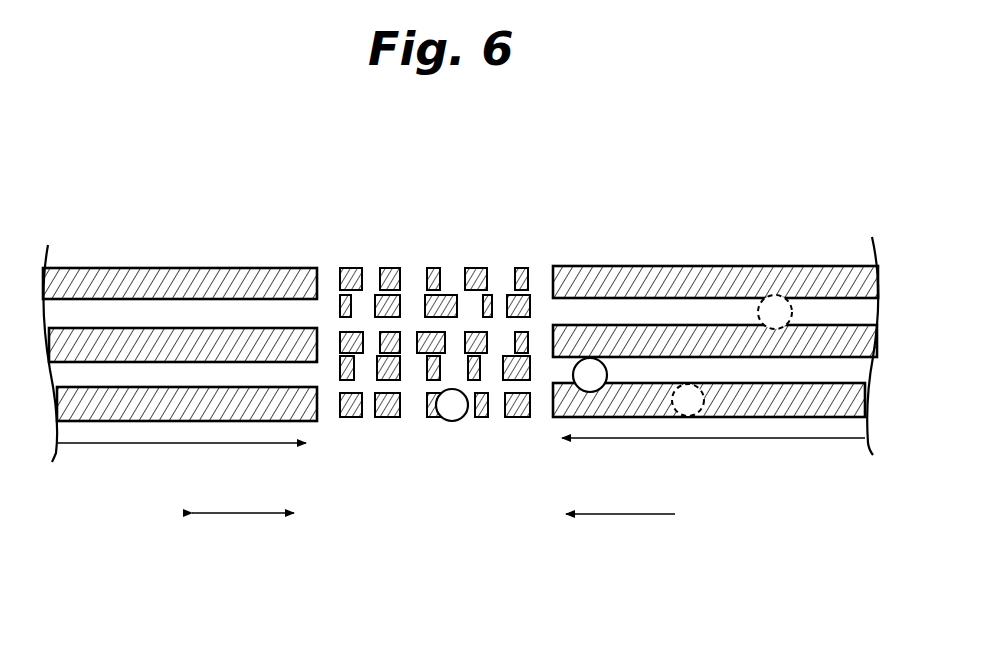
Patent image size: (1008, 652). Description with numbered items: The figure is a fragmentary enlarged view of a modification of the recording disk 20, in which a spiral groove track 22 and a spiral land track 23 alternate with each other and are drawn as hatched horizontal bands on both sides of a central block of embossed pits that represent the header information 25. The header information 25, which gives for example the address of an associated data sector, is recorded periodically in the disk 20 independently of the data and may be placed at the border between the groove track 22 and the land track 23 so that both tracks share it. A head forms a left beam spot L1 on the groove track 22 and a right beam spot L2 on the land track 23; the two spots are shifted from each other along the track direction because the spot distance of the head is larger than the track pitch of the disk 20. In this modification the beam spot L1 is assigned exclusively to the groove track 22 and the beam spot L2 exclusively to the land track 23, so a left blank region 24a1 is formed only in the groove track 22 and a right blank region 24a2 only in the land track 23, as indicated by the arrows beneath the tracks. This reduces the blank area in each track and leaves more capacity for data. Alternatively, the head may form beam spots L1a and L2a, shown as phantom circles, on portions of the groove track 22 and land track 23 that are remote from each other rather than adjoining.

The disk 20 is at (815, 164).
The groove track 22 is at (63, 268).
The land track 23 is at (73, 313).
The header information 25 is at (532, 440).
The left beam spot L1 is at (458, 391).
The right beam spot L2 is at (601, 358).
The beam spot L1a is at (690, 385).
The beam spot L2a is at (776, 295).
The left blank region 24a1 is at (242, 515).
The right blank region 24a2 is at (612, 515).